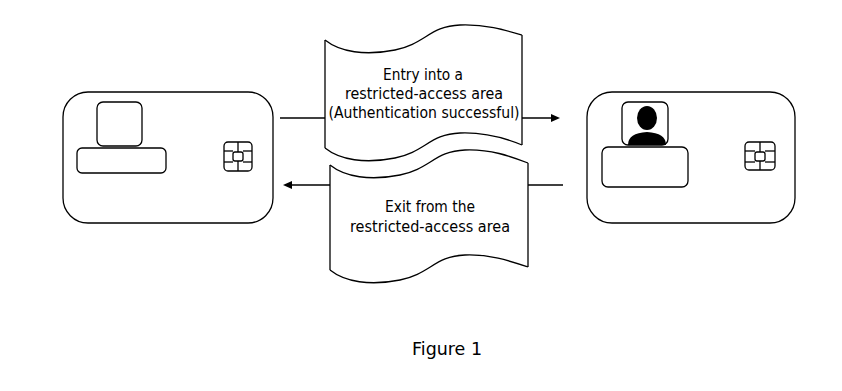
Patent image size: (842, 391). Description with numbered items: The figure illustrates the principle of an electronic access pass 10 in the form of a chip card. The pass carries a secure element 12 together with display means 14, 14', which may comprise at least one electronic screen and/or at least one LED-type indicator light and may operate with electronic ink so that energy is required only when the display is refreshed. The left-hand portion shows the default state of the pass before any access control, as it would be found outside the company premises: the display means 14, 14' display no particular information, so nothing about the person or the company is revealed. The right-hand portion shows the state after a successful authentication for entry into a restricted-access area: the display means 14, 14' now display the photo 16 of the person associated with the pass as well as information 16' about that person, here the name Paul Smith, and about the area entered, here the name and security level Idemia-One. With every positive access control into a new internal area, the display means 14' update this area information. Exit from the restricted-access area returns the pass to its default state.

The electronic access pass 10 is at (107, 207).
The secure element 12 is at (224, 157).
The display means 14 is at (356, 116).
The display means 14' is at (357, 155).
The photo 16 is at (637, 103).
The information 16' is at (672, 181).